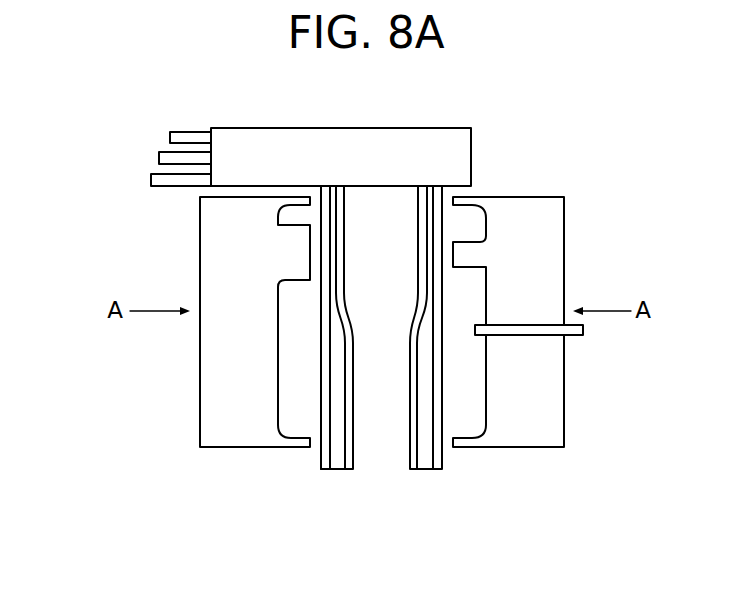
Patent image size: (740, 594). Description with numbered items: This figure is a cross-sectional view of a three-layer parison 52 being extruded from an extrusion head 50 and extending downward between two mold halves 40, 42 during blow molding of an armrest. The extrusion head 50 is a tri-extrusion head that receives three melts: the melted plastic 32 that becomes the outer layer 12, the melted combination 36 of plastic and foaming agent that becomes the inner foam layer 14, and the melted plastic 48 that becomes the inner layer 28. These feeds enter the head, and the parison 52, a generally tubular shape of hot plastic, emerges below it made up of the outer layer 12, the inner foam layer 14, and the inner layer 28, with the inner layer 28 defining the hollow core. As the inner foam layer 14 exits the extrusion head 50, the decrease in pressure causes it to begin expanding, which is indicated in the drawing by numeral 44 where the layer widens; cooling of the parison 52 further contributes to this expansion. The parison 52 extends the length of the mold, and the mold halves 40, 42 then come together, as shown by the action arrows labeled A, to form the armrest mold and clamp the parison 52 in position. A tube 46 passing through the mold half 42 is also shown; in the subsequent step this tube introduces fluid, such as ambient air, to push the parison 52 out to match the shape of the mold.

The outer layer 12 is at (320, 460).
The inner foam layer 14 is at (337, 469).
The inner layer 28 is at (355, 407).
The melted plastic 32 is at (165, 152).
The melted combination of plastic and foaming agent 36 is at (162, 187).
The mold half 40 is at (200, 410).
The mold half 42 is at (564, 408).
The expansion of the inner foam layer 44 is at (348, 438).
The tube 46 is at (573, 336).
The melted plastic 48 is at (177, 131).
The extrusion head 50 is at (265, 128).
The parison 52 is at (310, 344).